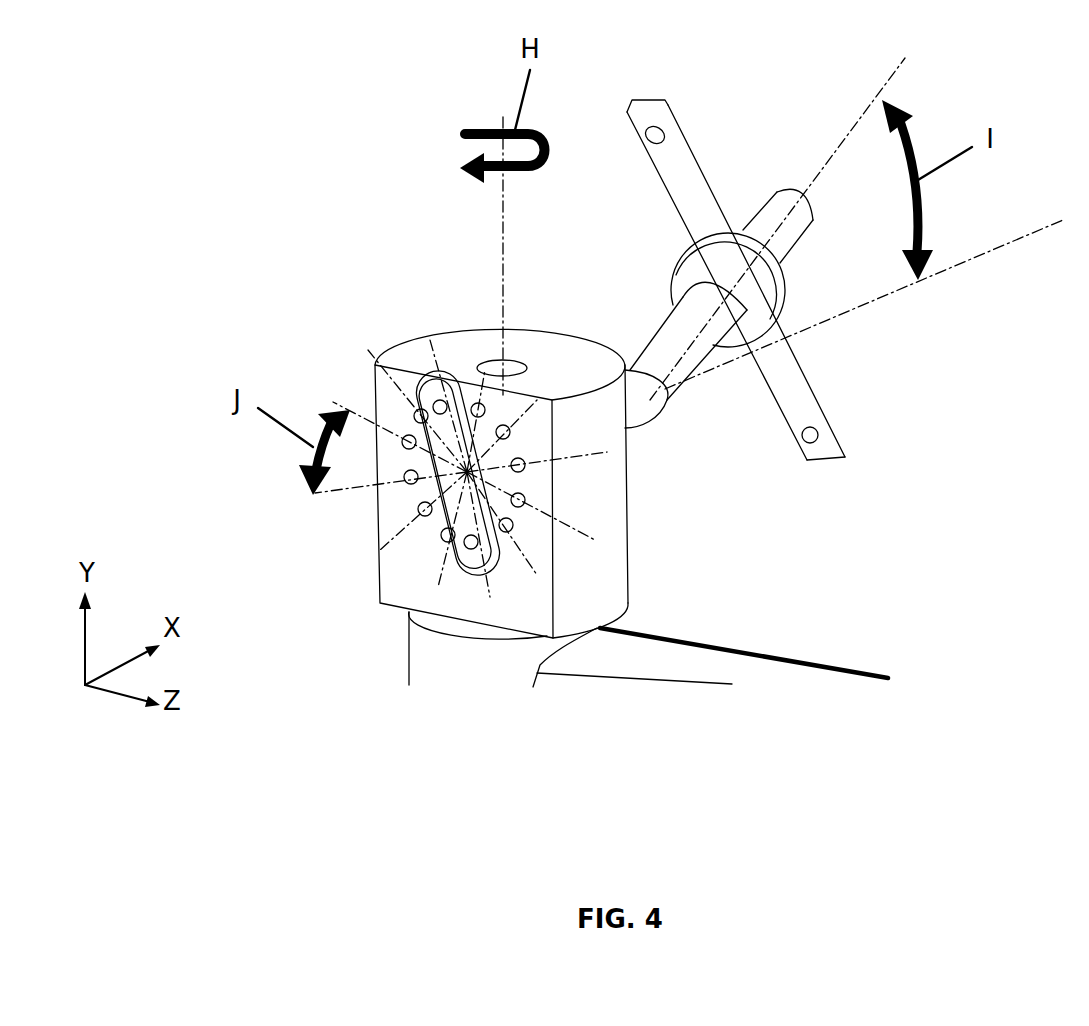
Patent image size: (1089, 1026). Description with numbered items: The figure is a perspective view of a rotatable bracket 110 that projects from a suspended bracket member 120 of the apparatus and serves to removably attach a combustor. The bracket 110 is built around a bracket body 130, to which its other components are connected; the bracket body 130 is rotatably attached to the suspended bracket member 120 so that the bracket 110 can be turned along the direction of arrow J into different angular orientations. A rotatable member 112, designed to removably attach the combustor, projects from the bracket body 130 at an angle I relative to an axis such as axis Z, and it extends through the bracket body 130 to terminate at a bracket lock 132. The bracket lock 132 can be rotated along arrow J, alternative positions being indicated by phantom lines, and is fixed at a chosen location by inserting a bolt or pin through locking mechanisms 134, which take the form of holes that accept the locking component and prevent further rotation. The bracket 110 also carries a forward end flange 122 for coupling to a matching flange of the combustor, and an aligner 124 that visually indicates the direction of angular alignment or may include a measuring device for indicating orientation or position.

The bracket 110 is at (350, 289).
The rotatable member 112 is at (752, 257).
The suspended bracket member 120 is at (820, 675).
The forward end flange 122 is at (652, 130).
The aligner 124 is at (800, 195).
The bracket body 130 is at (610, 585).
The bracket lock 132 is at (463, 518).
The locking mechanisms 134 is at (440, 402).